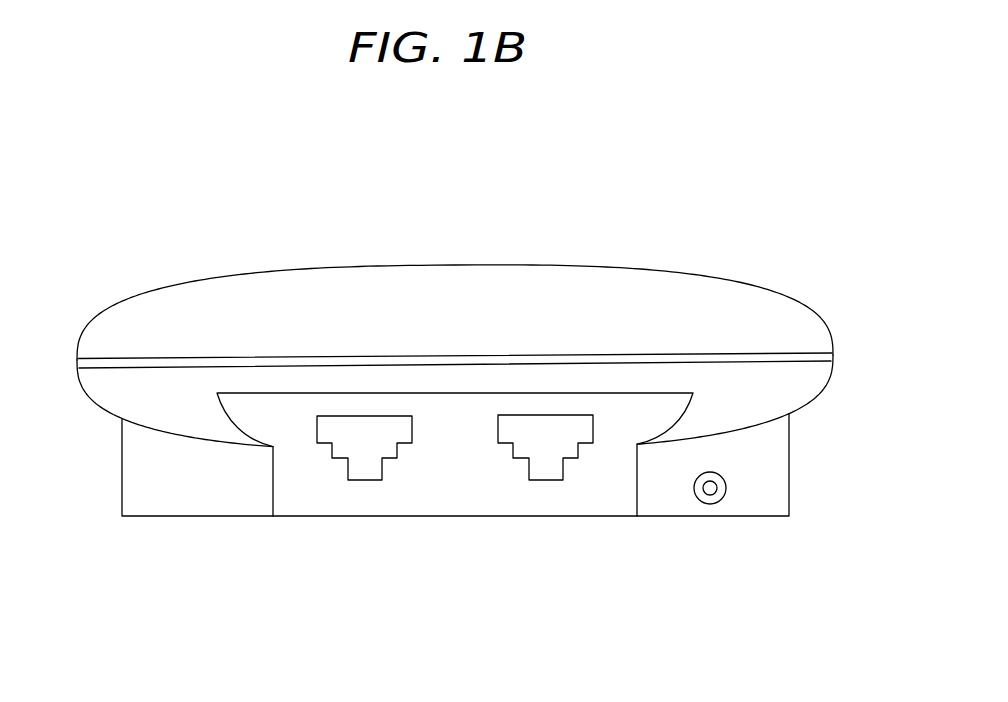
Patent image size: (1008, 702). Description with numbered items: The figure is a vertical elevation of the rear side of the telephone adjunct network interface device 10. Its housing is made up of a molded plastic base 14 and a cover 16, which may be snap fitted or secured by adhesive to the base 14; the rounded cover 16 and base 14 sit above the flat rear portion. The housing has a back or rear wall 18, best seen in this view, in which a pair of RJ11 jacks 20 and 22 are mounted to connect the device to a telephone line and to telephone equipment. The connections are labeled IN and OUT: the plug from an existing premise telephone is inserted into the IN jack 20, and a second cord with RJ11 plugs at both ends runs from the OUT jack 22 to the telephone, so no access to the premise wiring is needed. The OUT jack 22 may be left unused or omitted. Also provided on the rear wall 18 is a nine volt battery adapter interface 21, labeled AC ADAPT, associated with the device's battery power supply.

The telephone adjunct network interface device 10 is at (475, 349).
The base 14 is at (793, 385).
The cover 16 is at (745, 308).
The rear wall 18 is at (470, 471).
The IN RJ11 jack 20 is at (348, 467).
The 9 volt battery adapter interface 21 is at (712, 505).
The OUT RJ11 jack 22 is at (563, 468).